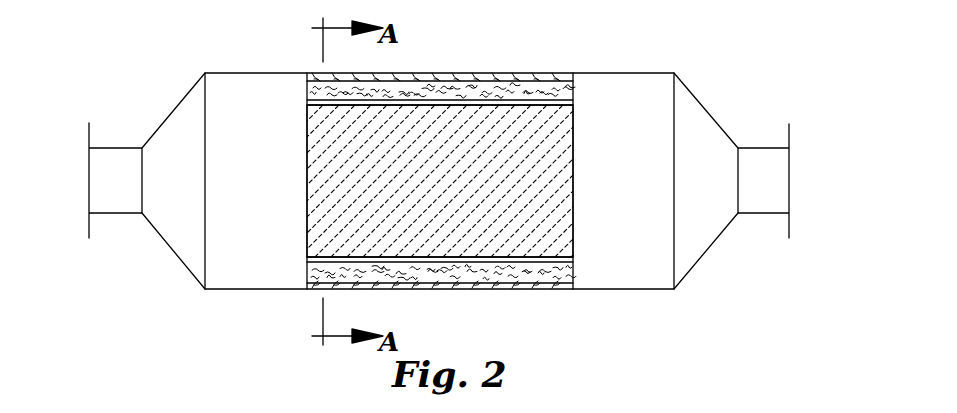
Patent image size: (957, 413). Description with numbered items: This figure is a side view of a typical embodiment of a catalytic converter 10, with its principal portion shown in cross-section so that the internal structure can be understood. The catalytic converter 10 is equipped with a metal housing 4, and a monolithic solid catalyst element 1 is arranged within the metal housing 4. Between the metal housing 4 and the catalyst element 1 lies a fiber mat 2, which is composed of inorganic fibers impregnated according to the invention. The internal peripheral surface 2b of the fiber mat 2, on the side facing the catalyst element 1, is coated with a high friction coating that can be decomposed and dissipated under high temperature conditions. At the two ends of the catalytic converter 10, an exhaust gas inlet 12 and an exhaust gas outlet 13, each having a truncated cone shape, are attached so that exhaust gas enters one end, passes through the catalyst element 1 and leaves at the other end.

The monolithic solid catalyst element 1 is at (485, 247).
The fiber mat 2 is at (485, 82).
The internal peripheral surface 2b is at (518, 102).
The metal housing 4 is at (428, 82).
The catalytic converter 10 is at (442, 173).
The exhaust gas inlet 12 is at (115, 157).
The exhaust gas outlet 13 is at (758, 160).